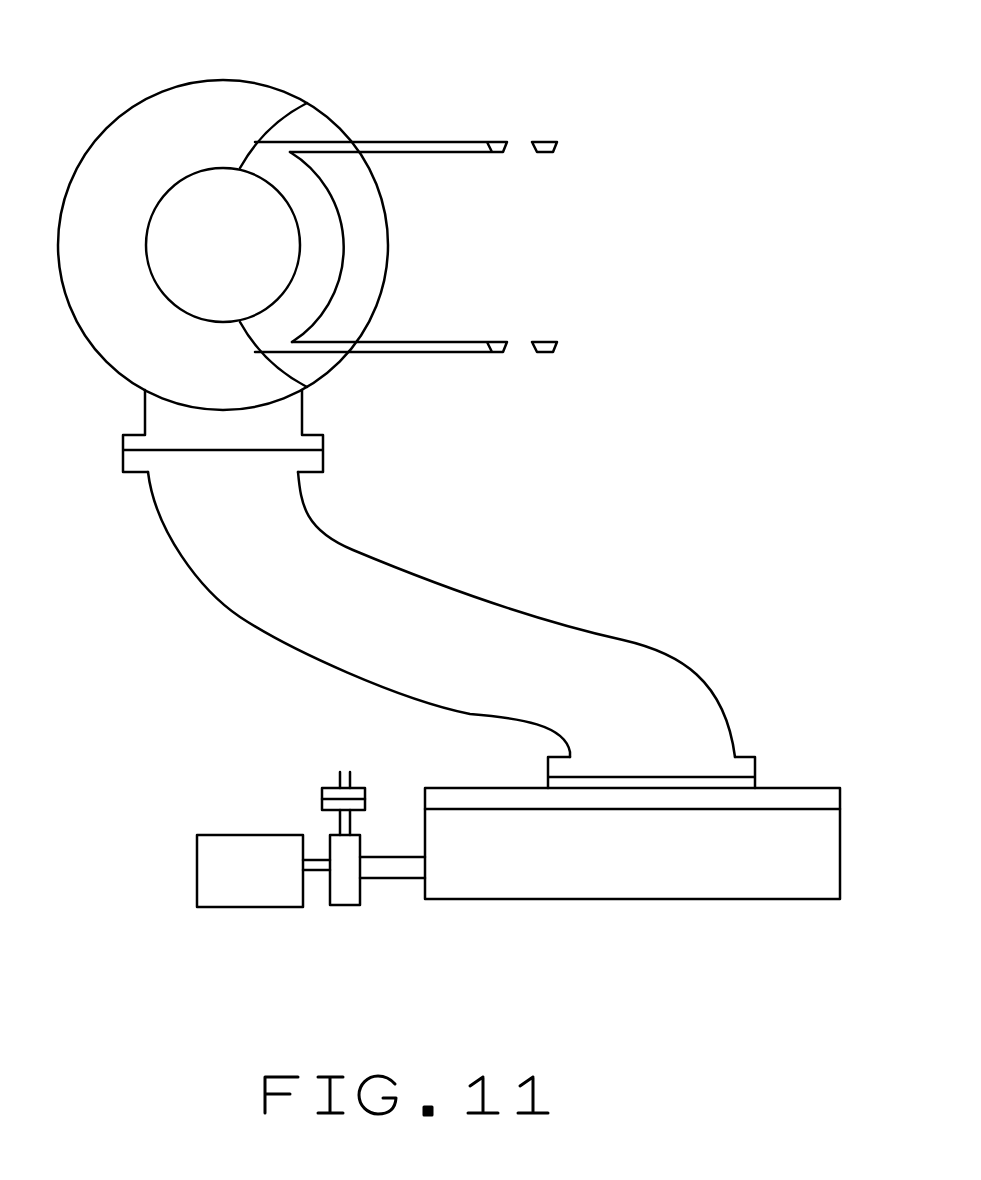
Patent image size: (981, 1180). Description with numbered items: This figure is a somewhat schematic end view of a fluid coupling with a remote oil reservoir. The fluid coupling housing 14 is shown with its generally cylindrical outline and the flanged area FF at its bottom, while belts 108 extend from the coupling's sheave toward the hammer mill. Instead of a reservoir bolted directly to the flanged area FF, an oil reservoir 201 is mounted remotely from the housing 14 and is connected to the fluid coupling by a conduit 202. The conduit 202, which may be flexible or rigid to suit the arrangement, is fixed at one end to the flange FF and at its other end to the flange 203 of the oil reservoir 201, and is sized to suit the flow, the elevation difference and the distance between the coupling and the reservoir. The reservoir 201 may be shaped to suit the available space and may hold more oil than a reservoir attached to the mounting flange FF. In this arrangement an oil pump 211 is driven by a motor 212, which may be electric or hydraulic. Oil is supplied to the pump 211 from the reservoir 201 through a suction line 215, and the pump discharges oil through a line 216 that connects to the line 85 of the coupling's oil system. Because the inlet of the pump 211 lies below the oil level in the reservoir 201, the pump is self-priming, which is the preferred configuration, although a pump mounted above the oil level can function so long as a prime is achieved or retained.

The housing 14 is at (328, 118).
The belts 108 is at (463, 141).
The flanged area FF is at (123, 435).
The conduit 202 is at (490, 602).
The flange of the oil reservoir 203 is at (755, 788).
The oil reservoir 201 is at (752, 899).
The suction line 215 is at (400, 878).
The oil pump 211 is at (342, 905).
The motor 212 is at (243, 907).
The discharge line 216 is at (340, 822).
The line 85 is at (342, 772).